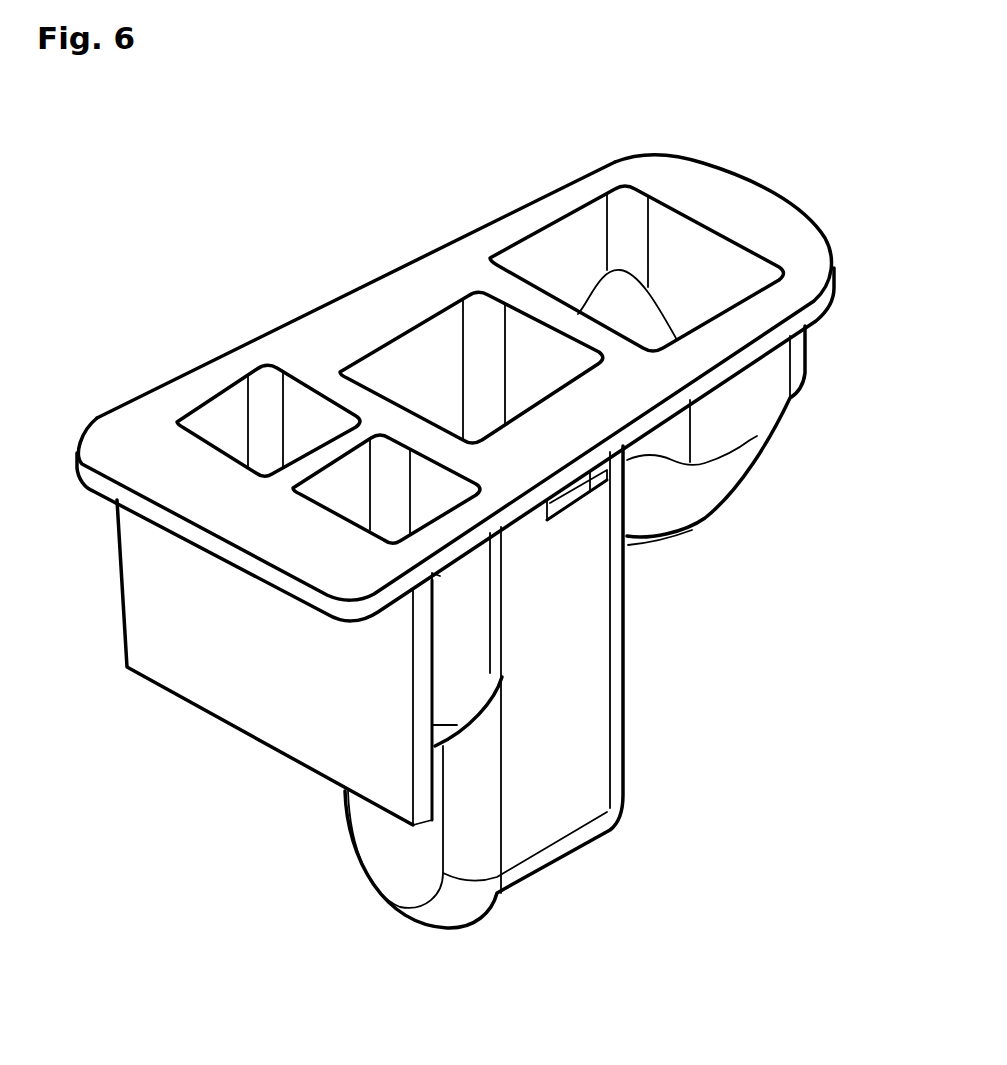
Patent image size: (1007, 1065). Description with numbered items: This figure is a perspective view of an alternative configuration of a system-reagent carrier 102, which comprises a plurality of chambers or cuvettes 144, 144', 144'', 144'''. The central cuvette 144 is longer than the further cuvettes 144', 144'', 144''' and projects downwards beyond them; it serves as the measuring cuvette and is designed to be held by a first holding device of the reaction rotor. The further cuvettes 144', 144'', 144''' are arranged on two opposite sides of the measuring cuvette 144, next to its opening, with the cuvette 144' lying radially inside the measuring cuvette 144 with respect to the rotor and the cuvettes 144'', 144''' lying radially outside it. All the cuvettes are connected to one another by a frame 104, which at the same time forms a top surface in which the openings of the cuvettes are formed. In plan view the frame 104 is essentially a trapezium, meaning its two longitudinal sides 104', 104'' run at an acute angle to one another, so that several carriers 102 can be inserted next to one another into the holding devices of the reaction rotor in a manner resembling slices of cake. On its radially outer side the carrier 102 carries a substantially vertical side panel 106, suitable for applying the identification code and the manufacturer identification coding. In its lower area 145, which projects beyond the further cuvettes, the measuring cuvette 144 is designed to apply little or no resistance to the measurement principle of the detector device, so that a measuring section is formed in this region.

The system-reagent carrier 102 is at (330, 232).
The frame 104 is at (454, 378).
The longitudinal side of the frame 104' is at (356, 274).
The longitudinal side of the frame 104'' is at (762, 435).
The side panel 106 is at (228, 679).
The central cuvette 144 is at (471, 301).
The further cuvette 144' is at (637, 204).
The further cuvette 144'' is at (216, 378).
The further cuvette 144''' is at (569, 533).
The lower area of the measuring cuvette 145 is at (367, 928).